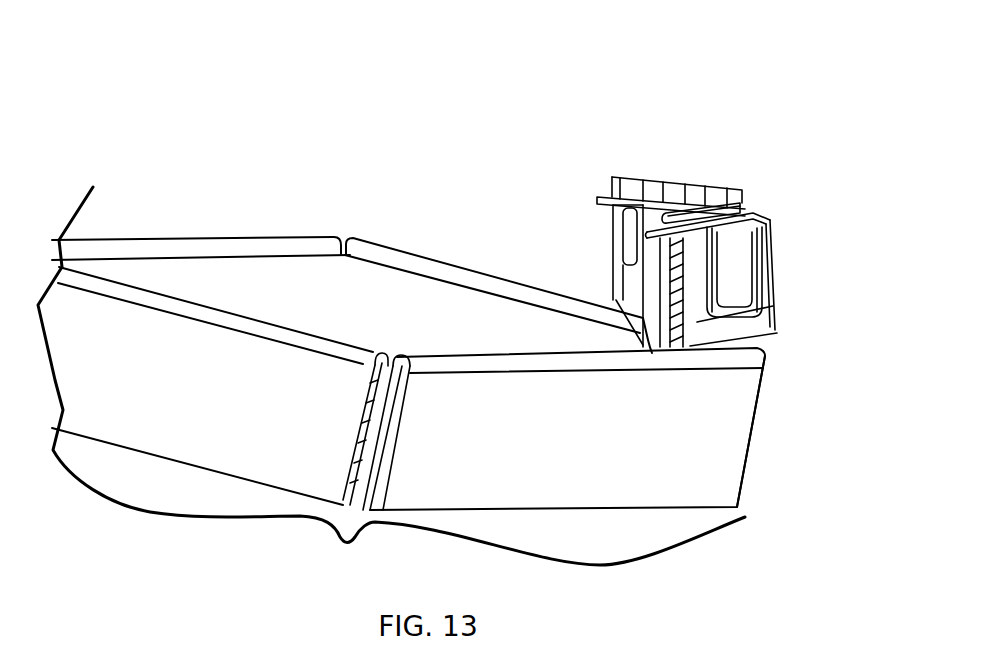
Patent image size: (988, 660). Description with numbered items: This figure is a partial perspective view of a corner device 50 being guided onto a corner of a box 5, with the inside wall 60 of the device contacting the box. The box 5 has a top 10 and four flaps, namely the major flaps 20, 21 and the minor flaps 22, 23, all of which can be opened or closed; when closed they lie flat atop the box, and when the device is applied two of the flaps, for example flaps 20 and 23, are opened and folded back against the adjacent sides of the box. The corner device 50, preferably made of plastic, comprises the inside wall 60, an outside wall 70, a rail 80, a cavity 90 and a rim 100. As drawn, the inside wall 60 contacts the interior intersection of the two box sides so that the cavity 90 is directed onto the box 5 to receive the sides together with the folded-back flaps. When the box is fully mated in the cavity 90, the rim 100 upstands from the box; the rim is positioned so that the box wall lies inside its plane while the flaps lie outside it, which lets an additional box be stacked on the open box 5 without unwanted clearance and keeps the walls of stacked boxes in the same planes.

The box 5 is at (753, 406).
The top 10 is at (380, 247).
The flap 20 is at (707, 393).
The flap 21 is at (205, 240).
The flap 22 is at (163, 458).
The flap 23 is at (493, 275).
The corner device 50 is at (753, 207).
The inside wall 60 is at (632, 270).
The outside wall 70 is at (775, 278).
The rail 80 is at (742, 203).
The cavity 90 is at (740, 287).
The rim 100 is at (681, 180).